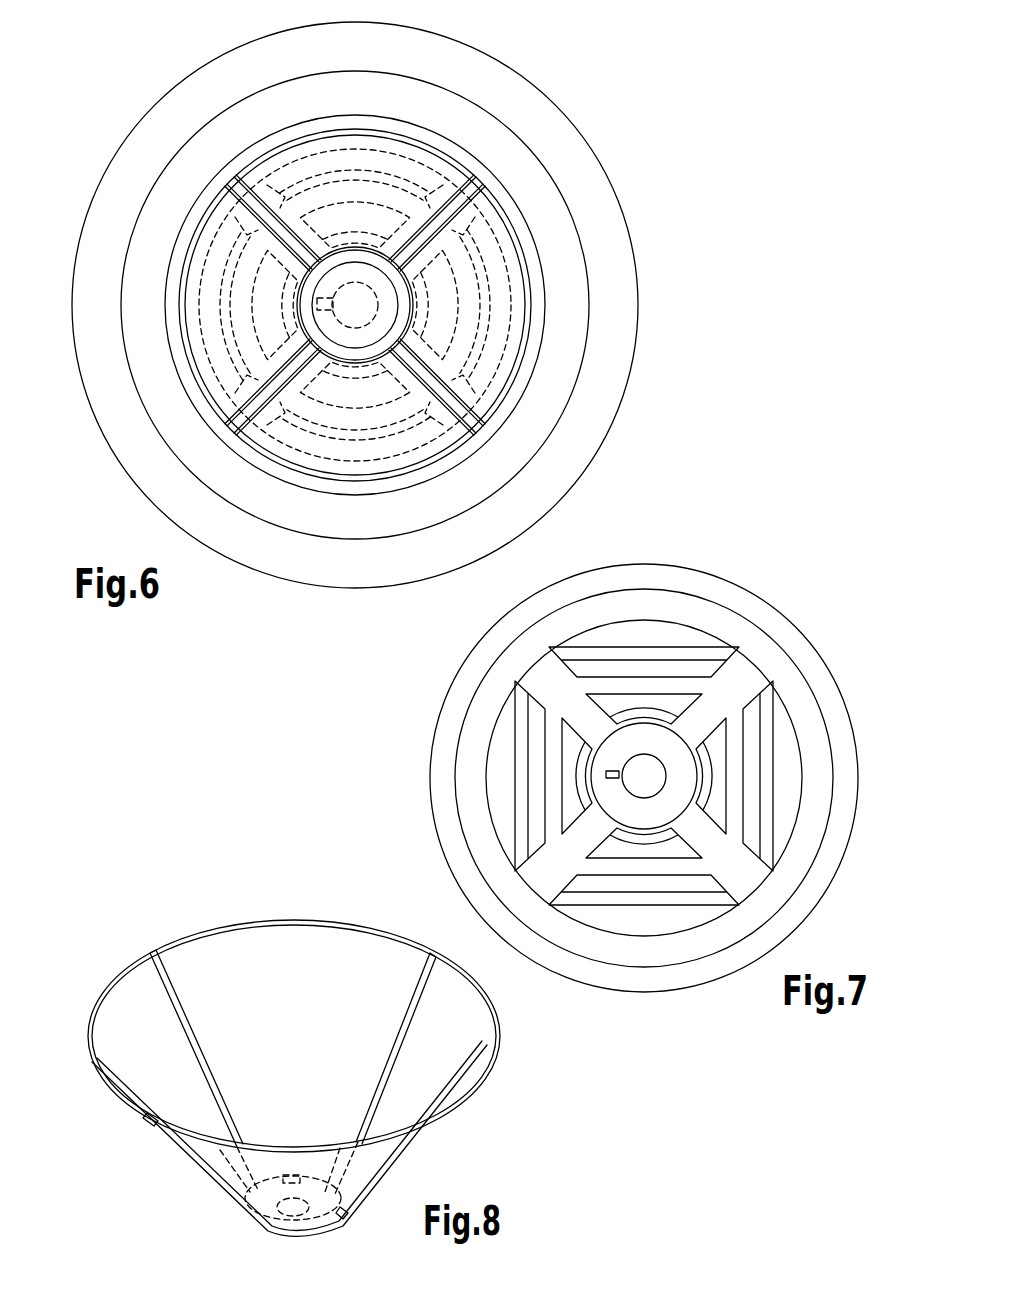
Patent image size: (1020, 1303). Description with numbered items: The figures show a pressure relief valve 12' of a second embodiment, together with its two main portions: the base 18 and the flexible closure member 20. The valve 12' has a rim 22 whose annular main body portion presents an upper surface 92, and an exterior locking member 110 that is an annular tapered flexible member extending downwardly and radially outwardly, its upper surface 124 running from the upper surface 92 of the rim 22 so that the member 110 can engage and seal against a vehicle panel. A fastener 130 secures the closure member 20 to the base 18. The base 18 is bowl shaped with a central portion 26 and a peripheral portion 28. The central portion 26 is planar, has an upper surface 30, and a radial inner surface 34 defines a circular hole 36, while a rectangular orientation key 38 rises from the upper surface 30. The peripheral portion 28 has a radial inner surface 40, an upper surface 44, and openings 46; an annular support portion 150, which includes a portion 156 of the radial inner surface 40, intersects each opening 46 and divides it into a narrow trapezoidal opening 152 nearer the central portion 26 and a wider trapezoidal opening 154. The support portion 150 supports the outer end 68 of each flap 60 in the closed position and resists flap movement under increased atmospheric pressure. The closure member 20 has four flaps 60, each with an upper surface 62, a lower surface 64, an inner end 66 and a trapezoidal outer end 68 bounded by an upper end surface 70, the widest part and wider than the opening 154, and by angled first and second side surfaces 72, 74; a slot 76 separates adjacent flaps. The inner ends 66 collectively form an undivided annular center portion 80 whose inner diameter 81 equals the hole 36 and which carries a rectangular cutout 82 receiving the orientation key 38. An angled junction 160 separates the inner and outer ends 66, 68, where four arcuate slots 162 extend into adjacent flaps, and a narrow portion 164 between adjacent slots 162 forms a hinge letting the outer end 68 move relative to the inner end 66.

In FIG. 6, the pressure relief valve 12' is at (434, 305).
In FIG. 6, the base 18 is at (490, 265).
In FIG. 7, the base 18 is at (456, 654).
In FIG. 6, the flexible closure member 20 is at (98, 412).
In FIG. 8, the flexible closure member 20 is at (118, 1100).
In FIG. 6, the rim 22 is at (593, 165).
In FIG. 7, the central portion 26 is at (781, 826).
In FIG. 6, the peripheral portion 28 is at (523, 393).
In FIG. 7, the peripheral portion 28 is at (707, 606).
In FIG. 7, the upper surface 30 is at (690, 845).
In FIG. 7, the radial inner surface 34 is at (641, 752).
In FIG. 7, the circular hole 36 is at (663, 754).
In FIG. 7, the orientation key 38 is at (611, 781).
In FIG. 6, the radial inner surface 40 is at (252, 167).
In FIG. 7, the radial inner surface 40 is at (813, 840).
In FIG. 7, the upper surface 44 is at (756, 608).
In FIG. 7, the openings 46 is at (727, 647).
In FIG. 6, the flap 60 is at (386, 155).
In FIG. 8, the flap 60 is at (335, 962).
In FIG. 8, the upper surface 62 is at (248, 975).
In FIG. 8, the lower surface 64 is at (385, 1150).
In FIG. 8, the inner end 66 is at (265, 1183).
In FIG. 8, the outer end 68 is at (281, 970).
In FIG. 8, the upper end surface 70 is at (185, 937).
In FIG. 8, the first side surface 72 is at (163, 983).
In FIG. 8, the second side surface 74 is at (420, 960).
In FIG. 8, the slot 76 is at (150, 945).
In FIG. 8, the annular center portion 80 is at (322, 1220).
In FIG. 8, the inner diameter 81 is at (345, 1205).
In FIG. 8, the rectangular cutout 82 is at (262, 1205).
In FIG. 6, the upper surface 92 is at (510, 453).
In FIG. 6, the exterior locking member 110 is at (180, 97).
In FIG. 6, the upper surface 124 is at (165, 130).
In FIG. 6, the fastener 130 is at (343, 288).
In FIG. 6, the annular support portion 150 is at (505, 350).
In FIG. 7, the annular support portion 150 is at (660, 635).
In FIG. 6, the narrow trapezoidal opening 152 is at (357, 220).
In FIG. 7, the narrow trapezoidal opening 152 is at (648, 655).
In FIG. 6, the wider trapezoidal opening 154 is at (343, 158).
In FIG. 7, the wider trapezoidal opening 154 is at (606, 635).
In FIG. 7, the portion of radial inner surface 156 is at (530, 786).
In FIG. 8, the angled junction 160 is at (290, 1237).
In FIG. 6, the arcuate slots 162 is at (350, 250).
In FIG. 8, the arcuate slots 162 is at (265, 1230).
In FIG. 6, the narrow portion 164 is at (440, 285).
In FIG. 8, the narrow portion 164 is at (289, 1175).